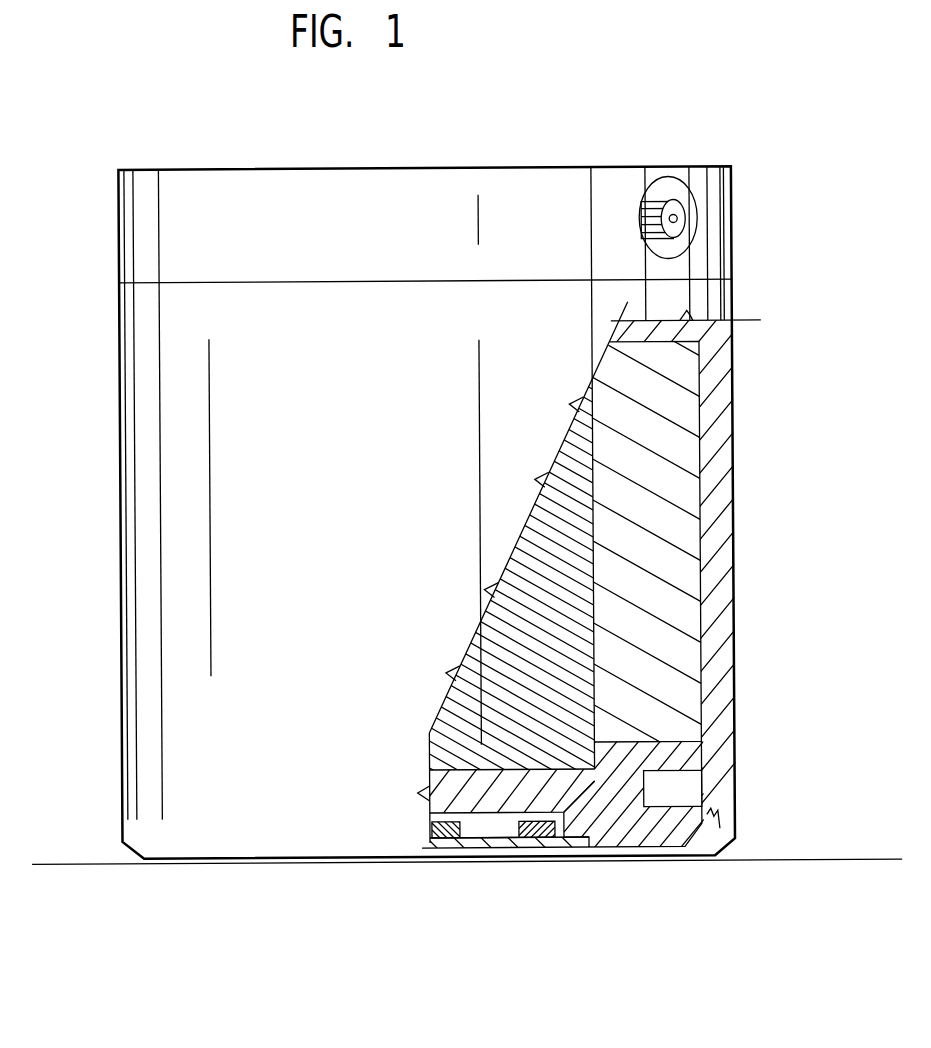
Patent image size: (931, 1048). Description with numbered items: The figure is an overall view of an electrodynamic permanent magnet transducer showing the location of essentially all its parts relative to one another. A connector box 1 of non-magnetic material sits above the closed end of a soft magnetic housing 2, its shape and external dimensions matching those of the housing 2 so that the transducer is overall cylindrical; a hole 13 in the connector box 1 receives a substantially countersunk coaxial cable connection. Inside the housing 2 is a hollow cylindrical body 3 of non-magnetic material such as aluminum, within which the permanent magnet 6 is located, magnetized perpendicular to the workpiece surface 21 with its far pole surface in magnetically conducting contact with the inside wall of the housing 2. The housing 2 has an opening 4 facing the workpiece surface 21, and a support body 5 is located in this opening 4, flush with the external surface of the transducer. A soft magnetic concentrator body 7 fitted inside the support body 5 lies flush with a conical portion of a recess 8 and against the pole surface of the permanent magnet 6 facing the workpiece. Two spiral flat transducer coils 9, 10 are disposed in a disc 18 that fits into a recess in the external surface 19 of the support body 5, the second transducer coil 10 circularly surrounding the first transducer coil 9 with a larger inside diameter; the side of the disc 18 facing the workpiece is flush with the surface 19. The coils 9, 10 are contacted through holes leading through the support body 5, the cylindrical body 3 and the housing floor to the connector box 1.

The connector box 1 is at (518, 188).
The soft magnetic housing 2 is at (715, 297).
The hollow cylindrical body 3 is at (687, 492).
The opening 4 is at (702, 810).
The support body 5 is at (688, 858).
The permanent magnet 6 is at (583, 672).
The concentrator body 7 is at (438, 793).
The recess 8 is at (572, 800).
The first transducer coil 9 is at (442, 838).
The second transducer coil 10 is at (536, 838).
The hole 13 is at (700, 212).
The disc 18 is at (487, 841).
The external surface 19 is at (705, 858).
The workpiece surface 21 is at (81, 864).